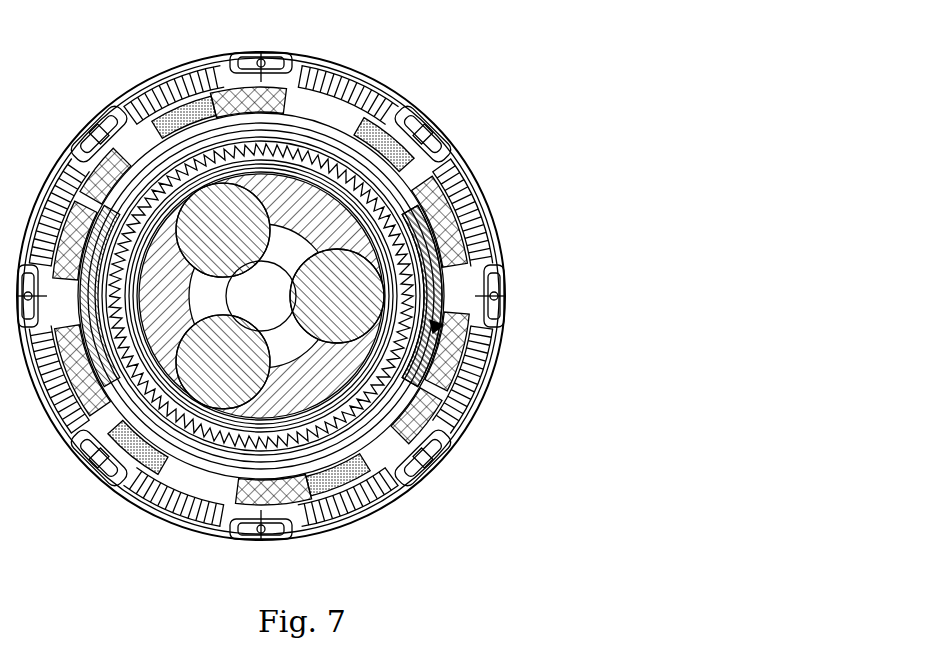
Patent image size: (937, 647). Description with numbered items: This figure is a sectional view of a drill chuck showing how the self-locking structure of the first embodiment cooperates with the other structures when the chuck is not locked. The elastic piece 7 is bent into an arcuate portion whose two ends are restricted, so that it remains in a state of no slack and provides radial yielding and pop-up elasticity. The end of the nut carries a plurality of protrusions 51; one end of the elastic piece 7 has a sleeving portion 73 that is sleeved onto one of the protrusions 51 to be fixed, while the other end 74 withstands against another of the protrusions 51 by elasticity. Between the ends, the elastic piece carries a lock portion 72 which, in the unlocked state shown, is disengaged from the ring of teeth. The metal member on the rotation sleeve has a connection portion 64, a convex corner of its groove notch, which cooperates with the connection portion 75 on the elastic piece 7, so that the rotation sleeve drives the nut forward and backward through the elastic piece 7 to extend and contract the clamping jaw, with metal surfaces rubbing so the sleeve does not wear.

The elastic piece 7 is at (410, 213).
The protrusions 51 is at (387, 157).
The connection portion 64 is at (437, 326).
The lock portion 72 is at (417, 300).
The sleeving portion 73 is at (368, 123).
The other end of the elastic piece 74 is at (347, 458).
The connection portion 75 is at (427, 327).